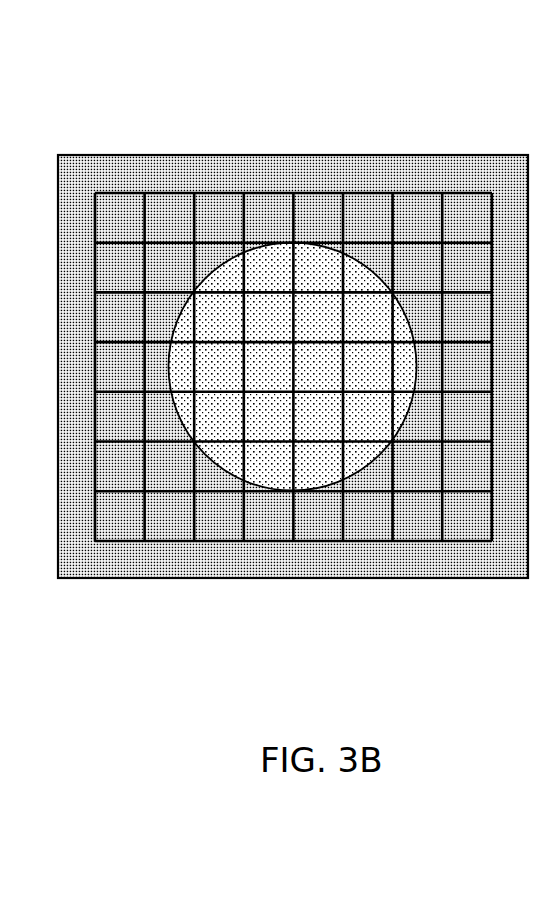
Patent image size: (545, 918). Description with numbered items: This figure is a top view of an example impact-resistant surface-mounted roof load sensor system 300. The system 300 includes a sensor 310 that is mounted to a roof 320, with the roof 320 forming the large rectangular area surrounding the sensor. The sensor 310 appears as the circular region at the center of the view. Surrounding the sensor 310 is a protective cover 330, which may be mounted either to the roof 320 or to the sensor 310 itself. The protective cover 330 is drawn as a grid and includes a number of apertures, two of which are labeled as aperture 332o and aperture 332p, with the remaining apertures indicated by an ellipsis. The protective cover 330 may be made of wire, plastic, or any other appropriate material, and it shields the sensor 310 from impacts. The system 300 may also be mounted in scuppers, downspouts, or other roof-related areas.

The impact-resistant roof sensor system 300 is at (288, 360).
The sensor 310 is at (302, 262).
The roof 320 is at (293, 580).
The protective cover 330 is at (415, 188).
The aperture 332o is at (126, 523).
The aperture 332p is at (169, 523).